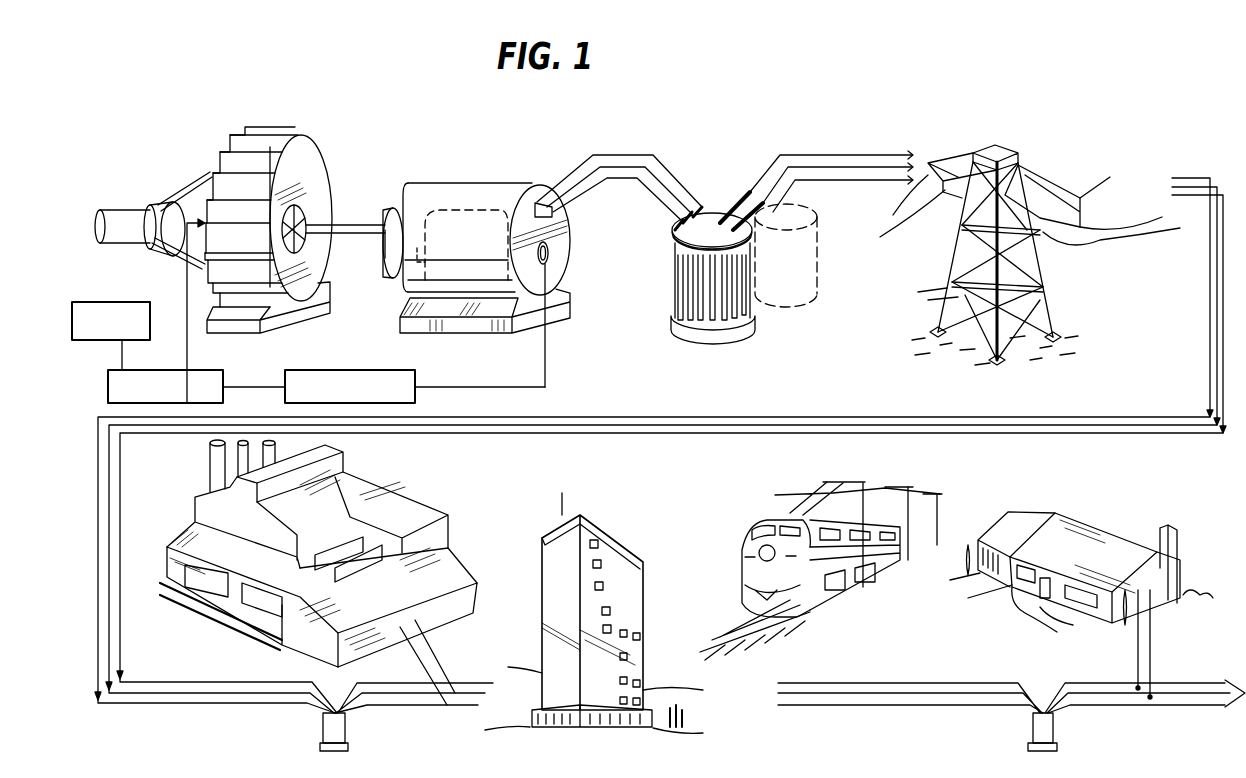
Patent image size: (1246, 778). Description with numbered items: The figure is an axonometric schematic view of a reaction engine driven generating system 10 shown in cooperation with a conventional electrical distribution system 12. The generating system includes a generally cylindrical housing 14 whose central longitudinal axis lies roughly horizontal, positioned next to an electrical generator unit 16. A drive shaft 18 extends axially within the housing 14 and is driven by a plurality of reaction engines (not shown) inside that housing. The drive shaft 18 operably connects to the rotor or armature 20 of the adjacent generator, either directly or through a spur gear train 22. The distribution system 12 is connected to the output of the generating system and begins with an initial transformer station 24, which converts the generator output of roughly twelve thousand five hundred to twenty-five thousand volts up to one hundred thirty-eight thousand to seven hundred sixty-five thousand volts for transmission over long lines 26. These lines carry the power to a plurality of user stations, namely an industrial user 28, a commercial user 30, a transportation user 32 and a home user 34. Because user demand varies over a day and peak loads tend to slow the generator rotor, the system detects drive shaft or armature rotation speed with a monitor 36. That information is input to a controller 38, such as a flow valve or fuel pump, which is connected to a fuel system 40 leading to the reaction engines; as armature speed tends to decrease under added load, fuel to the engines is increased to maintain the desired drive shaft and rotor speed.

The reaction engine driven generating system 10 is at (362, 170).
The electrical distribution system 12 is at (906, 132).
The cylindrical housing 14 is at (303, 138).
The electrical generator unit 16 is at (443, 183).
The drive shaft 18 is at (340, 223).
The rotor or armature 20 is at (548, 272).
The spur gear train 22 is at (392, 203).
The transformer station 24 is at (709, 195).
The long lines 26 is at (1077, 254).
The industrial user 28 is at (428, 494).
The commercial user 30 is at (626, 536).
The transportation user 32 is at (878, 580).
The home user 34 is at (1110, 521).
The monitor 36 is at (416, 380).
The controller 38 is at (224, 380).
The fuel system 40 is at (72, 318).